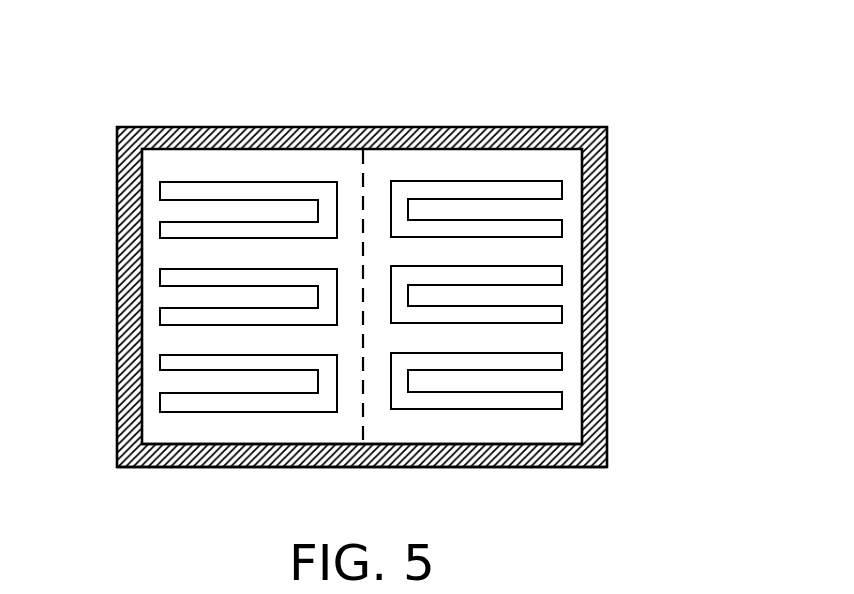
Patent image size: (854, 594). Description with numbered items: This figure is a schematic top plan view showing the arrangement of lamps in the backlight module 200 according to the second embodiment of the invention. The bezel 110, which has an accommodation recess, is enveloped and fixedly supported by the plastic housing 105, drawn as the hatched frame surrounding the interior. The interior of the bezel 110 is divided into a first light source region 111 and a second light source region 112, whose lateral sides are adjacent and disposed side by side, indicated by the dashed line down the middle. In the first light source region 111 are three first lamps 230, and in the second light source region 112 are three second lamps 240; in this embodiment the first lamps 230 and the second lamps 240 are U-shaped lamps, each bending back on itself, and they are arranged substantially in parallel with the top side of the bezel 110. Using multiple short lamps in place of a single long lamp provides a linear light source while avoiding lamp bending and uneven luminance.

The backlight module 200 is at (657, 37).
The bezel 110 is at (567, 155).
The plastic housing 105 is at (607, 453).
The first light source region 111 is at (247, 160).
The second light source region 112 is at (513, 160).
The first lamps 230 is at (173, 192).
The second lamps 240 is at (548, 188).